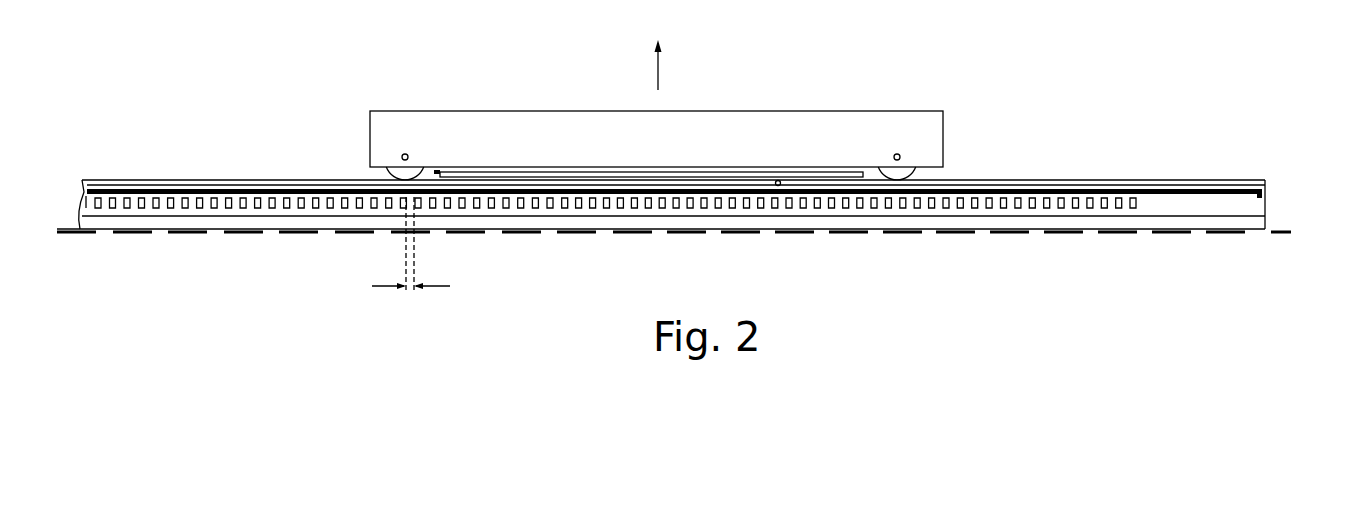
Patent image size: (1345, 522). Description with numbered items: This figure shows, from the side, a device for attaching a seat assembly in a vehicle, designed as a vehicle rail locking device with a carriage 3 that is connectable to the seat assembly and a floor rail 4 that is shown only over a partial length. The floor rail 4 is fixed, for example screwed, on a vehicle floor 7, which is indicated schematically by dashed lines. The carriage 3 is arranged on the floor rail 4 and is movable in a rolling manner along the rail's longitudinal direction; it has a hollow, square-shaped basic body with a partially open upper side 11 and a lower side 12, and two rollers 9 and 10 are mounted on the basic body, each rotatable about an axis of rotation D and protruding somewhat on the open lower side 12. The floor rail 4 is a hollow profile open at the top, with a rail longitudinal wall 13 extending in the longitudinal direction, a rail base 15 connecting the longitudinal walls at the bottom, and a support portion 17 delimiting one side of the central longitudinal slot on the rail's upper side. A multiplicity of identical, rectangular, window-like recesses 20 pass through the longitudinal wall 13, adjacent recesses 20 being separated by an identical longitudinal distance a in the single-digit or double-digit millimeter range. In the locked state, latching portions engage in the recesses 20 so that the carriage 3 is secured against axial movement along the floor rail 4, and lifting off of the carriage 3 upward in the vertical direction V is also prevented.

The carriage 3 is at (949, 101).
The floor rail 4 is at (1258, 175).
The vehicle floor 7 is at (1278, 224).
The roller 9 is at (386, 177).
The roller 10 is at (927, 178).
The upper side 11 is at (830, 110).
The lower side 12 is at (943, 172).
The rail longitudinal wall 13 is at (1177, 208).
The rail base 15 is at (103, 230).
The support portion 17 is at (148, 180).
The window-like recesses 20 is at (301, 208).
The axis of rotation D is at (405, 154).
The vertical direction V is at (658, 70).
The longitudinal distance a is at (411, 256).